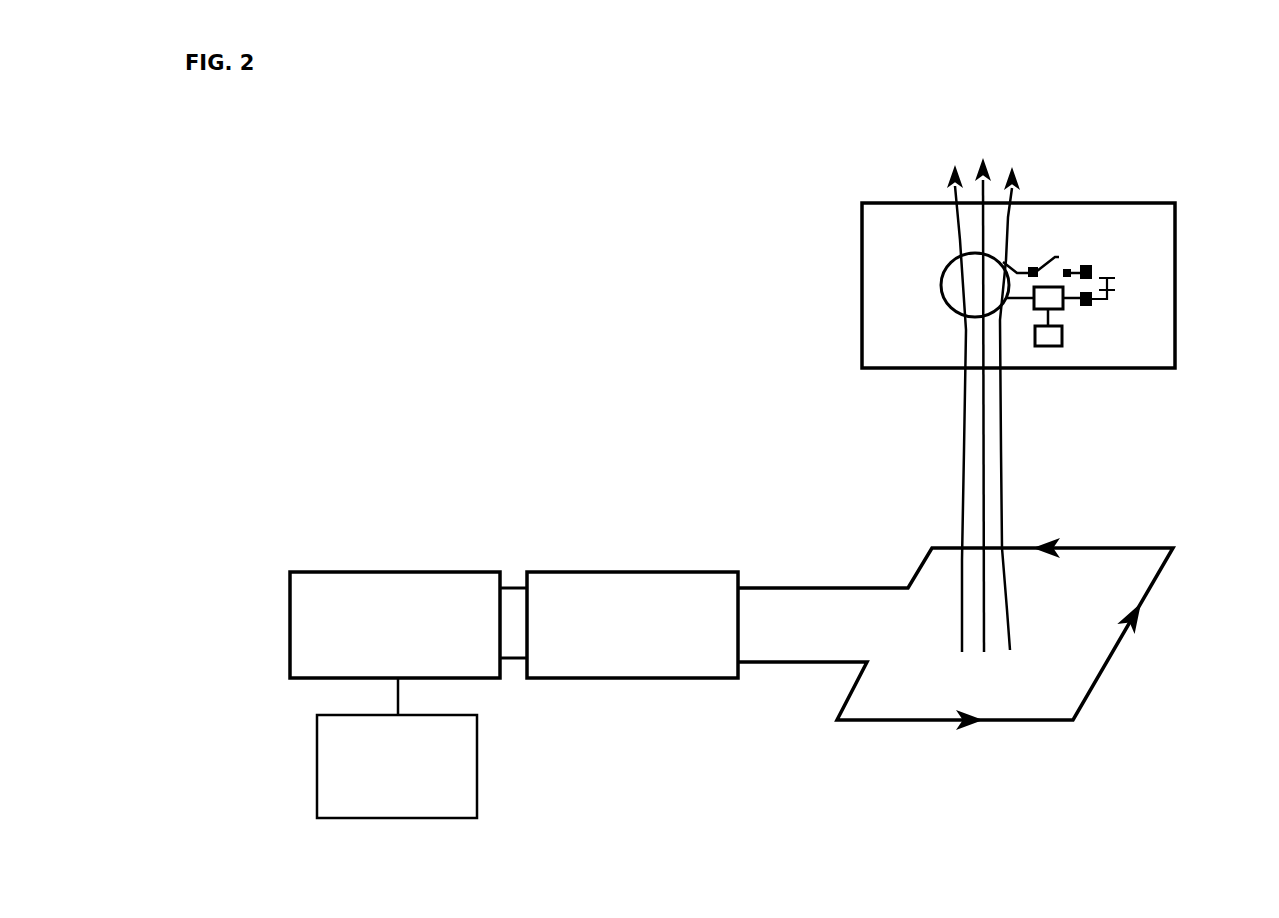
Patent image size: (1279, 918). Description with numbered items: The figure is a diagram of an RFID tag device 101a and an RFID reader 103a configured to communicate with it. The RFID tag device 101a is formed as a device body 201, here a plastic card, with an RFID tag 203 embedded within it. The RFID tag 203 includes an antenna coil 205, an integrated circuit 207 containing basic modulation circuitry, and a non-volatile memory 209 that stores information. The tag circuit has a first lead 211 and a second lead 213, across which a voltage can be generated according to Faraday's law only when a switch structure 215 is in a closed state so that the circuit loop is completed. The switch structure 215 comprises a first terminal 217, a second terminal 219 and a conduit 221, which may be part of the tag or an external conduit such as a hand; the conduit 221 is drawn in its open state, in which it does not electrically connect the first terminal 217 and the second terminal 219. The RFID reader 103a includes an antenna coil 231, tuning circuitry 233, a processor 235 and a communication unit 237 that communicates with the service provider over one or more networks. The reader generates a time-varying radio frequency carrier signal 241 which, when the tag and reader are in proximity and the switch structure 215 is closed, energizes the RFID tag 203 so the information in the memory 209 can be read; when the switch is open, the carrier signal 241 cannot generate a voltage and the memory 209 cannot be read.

The RFID tag device 101a is at (733, 191).
The RFID reader 103a is at (610, 538).
The device body 201 is at (860, 240).
The RFID tag 203 is at (945, 235).
The antenna coil 205 is at (940, 284).
The integrated circuit 207 is at (1063, 308).
The non-volatile memory 209 is at (1062, 346).
The first lead 211 is at (1093, 303).
The second lead 213 is at (1093, 268).
The switch structure 215 is at (1085, 190).
The first terminal 217 is at (1033, 265).
The second terminal 219 is at (1068, 271).
The conduit 221 is at (1047, 255).
The antenna coil 231 is at (920, 565).
The tuning circuitry 233 is at (633, 678).
The processor 235 is at (372, 571).
The communication unit 237 is at (408, 801).
The carrier signal 241 is at (1005, 440).